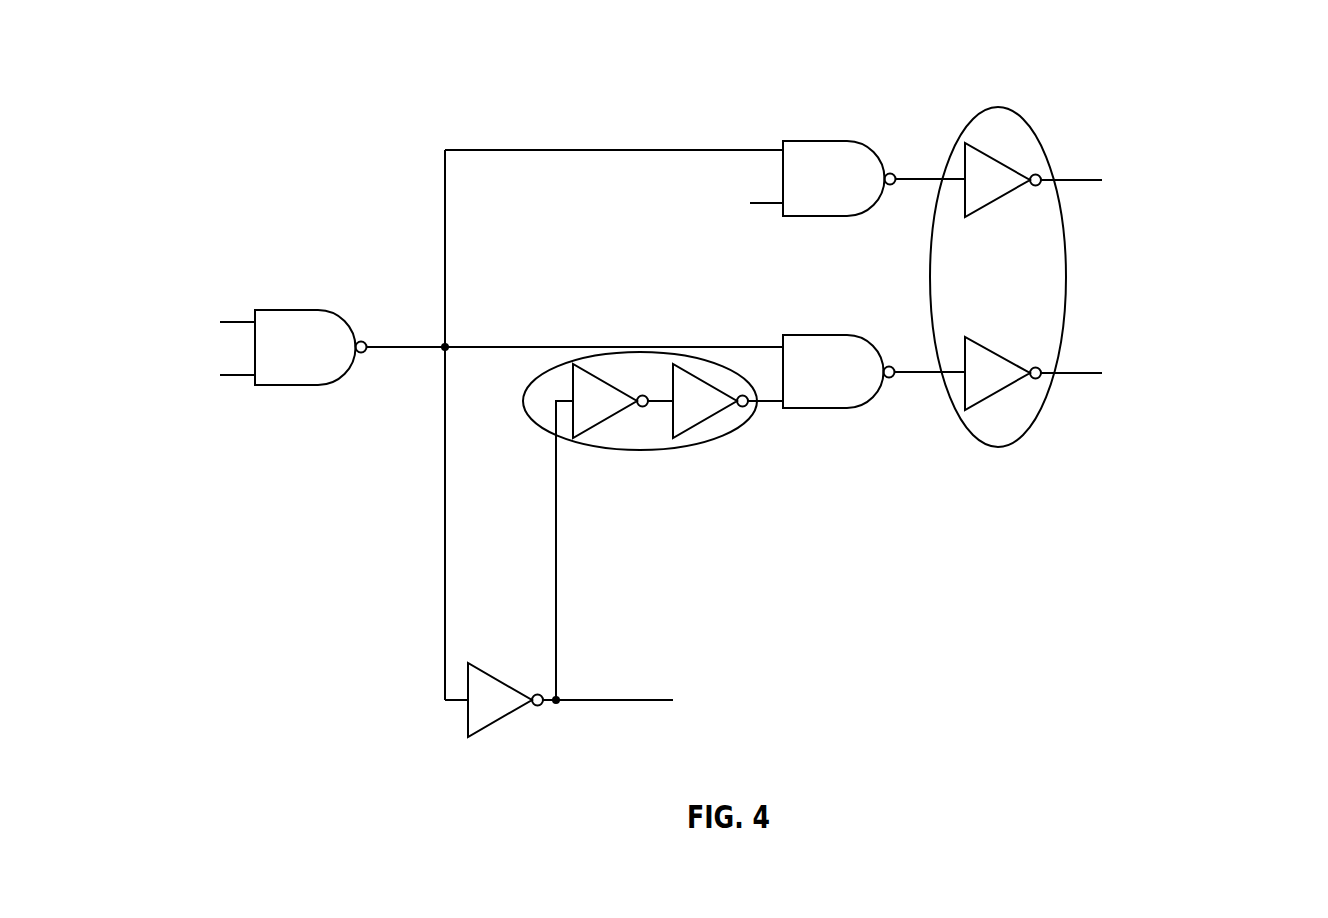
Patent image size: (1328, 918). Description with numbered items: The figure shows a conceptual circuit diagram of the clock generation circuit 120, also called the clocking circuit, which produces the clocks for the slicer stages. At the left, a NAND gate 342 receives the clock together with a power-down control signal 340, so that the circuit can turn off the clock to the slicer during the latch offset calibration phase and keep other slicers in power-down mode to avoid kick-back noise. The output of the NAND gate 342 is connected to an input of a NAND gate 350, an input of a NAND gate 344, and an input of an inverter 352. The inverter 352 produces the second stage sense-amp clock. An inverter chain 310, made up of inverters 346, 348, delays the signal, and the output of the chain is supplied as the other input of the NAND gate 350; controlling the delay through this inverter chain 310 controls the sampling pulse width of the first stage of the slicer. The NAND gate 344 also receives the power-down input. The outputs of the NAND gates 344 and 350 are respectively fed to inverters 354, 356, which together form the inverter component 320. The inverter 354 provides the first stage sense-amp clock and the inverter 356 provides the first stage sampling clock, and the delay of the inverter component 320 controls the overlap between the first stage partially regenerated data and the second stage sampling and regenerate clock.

The clock generation circuit 120 is at (819, 53).
The inverter chain 310 is at (653, 502).
The inverter component 320 is at (1018, 279).
The control signal 340 is at (119, 323).
The NAND gate 342 is at (312, 310).
The NAND gate 344 is at (818, 216).
The inverter 346 is at (605, 378).
The inverter 348 is at (703, 380).
The NAND gate 350 is at (812, 408).
The inverter 352 is at (500, 675).
The inverter 354 is at (1000, 200).
The inverter 356 is at (998, 393).